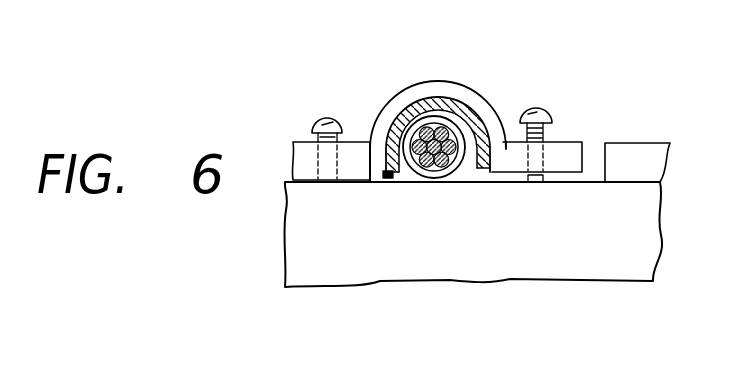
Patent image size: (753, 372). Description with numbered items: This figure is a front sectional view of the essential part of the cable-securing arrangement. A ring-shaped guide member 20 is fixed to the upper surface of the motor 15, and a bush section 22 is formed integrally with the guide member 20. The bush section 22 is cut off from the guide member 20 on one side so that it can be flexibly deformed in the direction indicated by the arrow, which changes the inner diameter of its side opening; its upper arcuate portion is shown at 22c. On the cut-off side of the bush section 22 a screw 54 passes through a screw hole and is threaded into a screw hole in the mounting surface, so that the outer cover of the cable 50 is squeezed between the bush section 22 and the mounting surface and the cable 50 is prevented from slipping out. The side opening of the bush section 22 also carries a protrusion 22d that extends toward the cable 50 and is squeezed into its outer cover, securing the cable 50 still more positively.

The motor 15 is at (550, 273).
The guide member 20 is at (290, 140).
The bush section 22 is at (366, 118).
The arcuate top portion of clamp 22c is at (437, 81).
The protrusion 22d is at (412, 112).
The cable 50 is at (425, 168).
The screw 54 is at (552, 112).